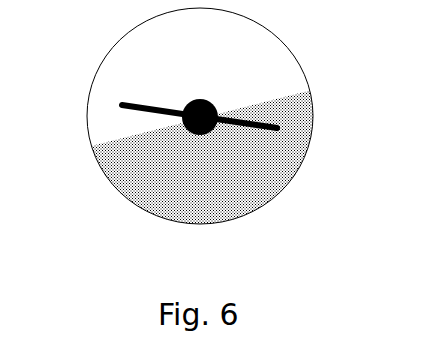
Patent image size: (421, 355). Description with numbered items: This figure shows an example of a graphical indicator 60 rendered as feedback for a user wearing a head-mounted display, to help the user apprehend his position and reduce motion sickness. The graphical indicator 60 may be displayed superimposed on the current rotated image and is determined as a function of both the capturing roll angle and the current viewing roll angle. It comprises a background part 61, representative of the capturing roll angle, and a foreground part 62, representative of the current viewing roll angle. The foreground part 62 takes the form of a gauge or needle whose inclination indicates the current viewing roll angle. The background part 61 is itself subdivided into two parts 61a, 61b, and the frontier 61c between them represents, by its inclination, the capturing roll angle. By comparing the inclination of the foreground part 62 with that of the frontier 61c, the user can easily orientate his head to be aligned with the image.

The graphical indicator 60 is at (108, 58).
The background part 61 is at (98, 128).
The first part of the background part 61a is at (293, 63).
The second part of the background part 61b is at (123, 187).
The frontier 61c is at (293, 92).
The foreground part 62 is at (268, 128).